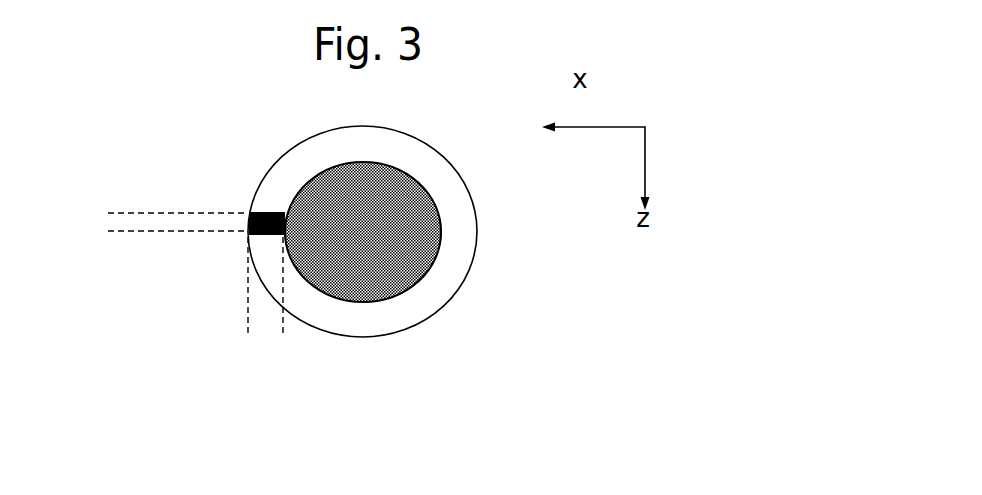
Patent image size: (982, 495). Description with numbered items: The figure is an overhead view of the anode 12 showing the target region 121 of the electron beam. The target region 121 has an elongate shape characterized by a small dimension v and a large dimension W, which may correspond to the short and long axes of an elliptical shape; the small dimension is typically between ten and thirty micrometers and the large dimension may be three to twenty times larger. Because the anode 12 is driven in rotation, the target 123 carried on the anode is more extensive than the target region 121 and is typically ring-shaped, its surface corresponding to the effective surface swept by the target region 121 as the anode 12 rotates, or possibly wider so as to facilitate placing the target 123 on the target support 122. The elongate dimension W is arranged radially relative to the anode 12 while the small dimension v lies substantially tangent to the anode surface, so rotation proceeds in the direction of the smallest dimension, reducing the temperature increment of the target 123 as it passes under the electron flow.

The anode 12 is at (140, 127).
The target region 121 is at (250, 235).
The target support 122 is at (403, 263).
The target 123 is at (458, 219).